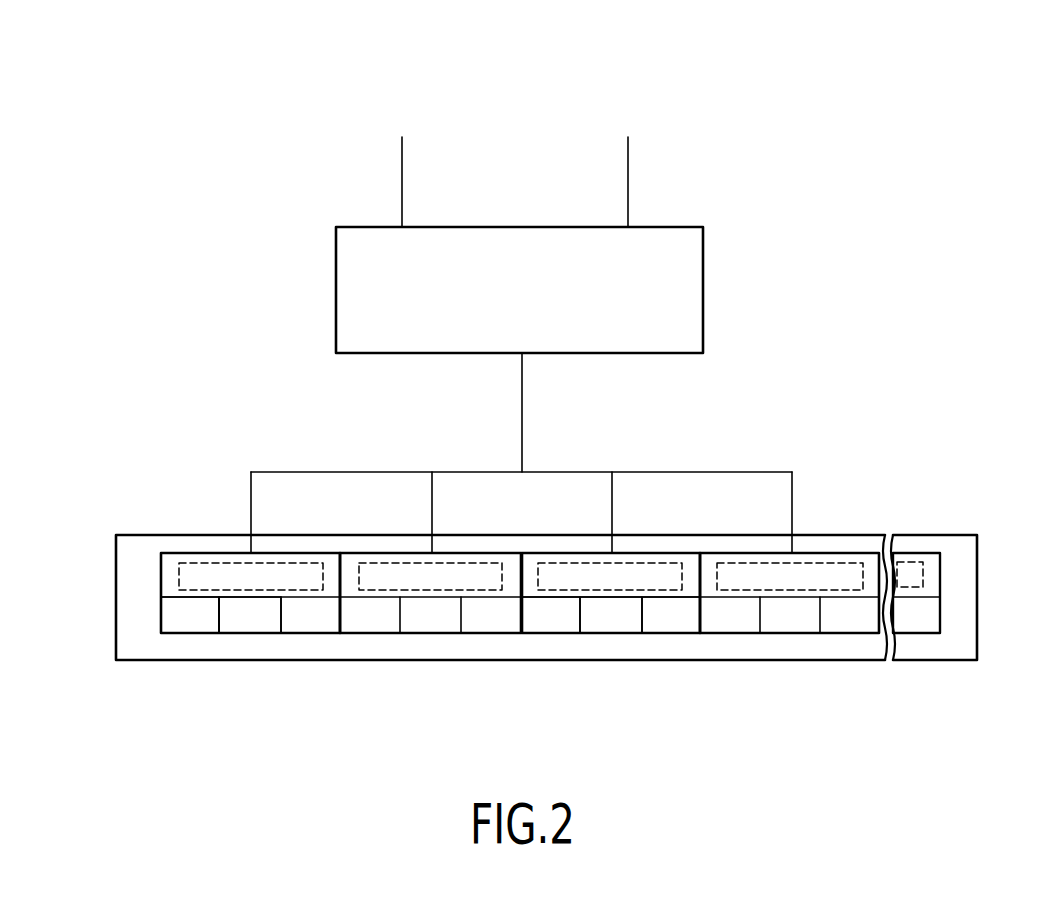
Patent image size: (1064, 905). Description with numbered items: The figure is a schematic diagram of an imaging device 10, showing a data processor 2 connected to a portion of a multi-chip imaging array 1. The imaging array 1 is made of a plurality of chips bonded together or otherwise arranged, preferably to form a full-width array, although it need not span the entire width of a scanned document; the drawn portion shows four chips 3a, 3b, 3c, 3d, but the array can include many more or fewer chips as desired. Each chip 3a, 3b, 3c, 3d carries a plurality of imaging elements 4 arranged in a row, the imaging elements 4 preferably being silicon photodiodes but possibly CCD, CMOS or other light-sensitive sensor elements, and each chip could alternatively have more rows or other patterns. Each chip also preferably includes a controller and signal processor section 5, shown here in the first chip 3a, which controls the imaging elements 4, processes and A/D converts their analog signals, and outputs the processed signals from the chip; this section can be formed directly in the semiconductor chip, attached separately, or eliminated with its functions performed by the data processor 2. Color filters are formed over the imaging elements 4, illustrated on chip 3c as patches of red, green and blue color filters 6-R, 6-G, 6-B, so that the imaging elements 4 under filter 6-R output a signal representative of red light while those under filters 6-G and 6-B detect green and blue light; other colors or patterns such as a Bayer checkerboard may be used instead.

The imaging device 10 is at (867, 167).
The data processor 2 is at (703, 287).
The imaging array 1 is at (918, 653).
The chip 3a is at (160, 598).
The chip 3b is at (363, 635).
The chip 3c is at (672, 551).
The chip 3d is at (836, 553).
The imaging element 4 is at (185, 625).
The controller and signal processor section 5 is at (205, 562).
The red color filter 6-R is at (547, 617).
The green color filter 6-G is at (610, 617).
The blue color filter 6-B is at (665, 617).